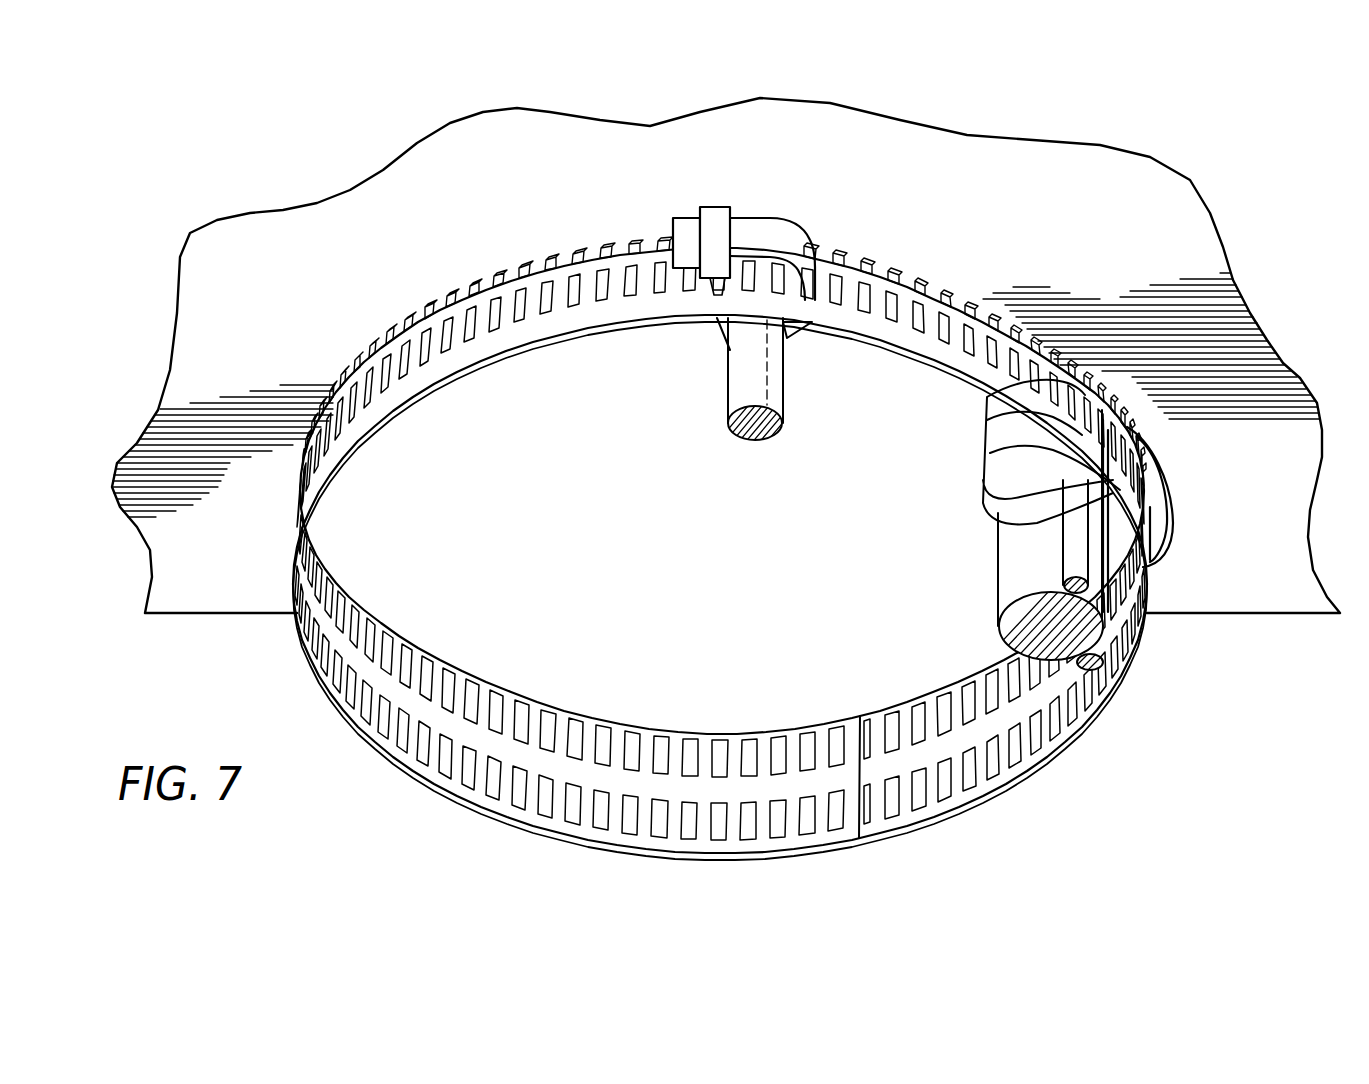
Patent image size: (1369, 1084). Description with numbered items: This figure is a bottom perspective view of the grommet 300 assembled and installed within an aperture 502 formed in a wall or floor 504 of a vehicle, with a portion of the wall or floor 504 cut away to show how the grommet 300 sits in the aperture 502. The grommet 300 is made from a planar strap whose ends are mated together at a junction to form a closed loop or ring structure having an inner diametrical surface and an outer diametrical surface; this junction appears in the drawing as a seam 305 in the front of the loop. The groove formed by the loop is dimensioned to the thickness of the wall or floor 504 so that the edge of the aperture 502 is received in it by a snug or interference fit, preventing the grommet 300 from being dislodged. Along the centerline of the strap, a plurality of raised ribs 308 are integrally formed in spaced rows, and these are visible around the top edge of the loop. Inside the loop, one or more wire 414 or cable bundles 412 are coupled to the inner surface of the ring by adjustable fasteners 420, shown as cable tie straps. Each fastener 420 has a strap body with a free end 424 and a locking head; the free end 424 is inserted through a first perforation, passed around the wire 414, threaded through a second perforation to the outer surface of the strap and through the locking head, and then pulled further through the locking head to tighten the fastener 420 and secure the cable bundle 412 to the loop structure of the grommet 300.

The grommet 300 is at (1005, 787).
The seam / joint of band 305 is at (863, 777).
The raised ribs 308 is at (488, 285).
The cable bundle 412 is at (965, 625).
The wire 414 is at (752, 437).
The adjustable fastener 420 is at (803, 280).
The free end 424 is at (687, 265).
The aperture 502 is at (1143, 617).
The wall or floor 504 is at (1250, 614).